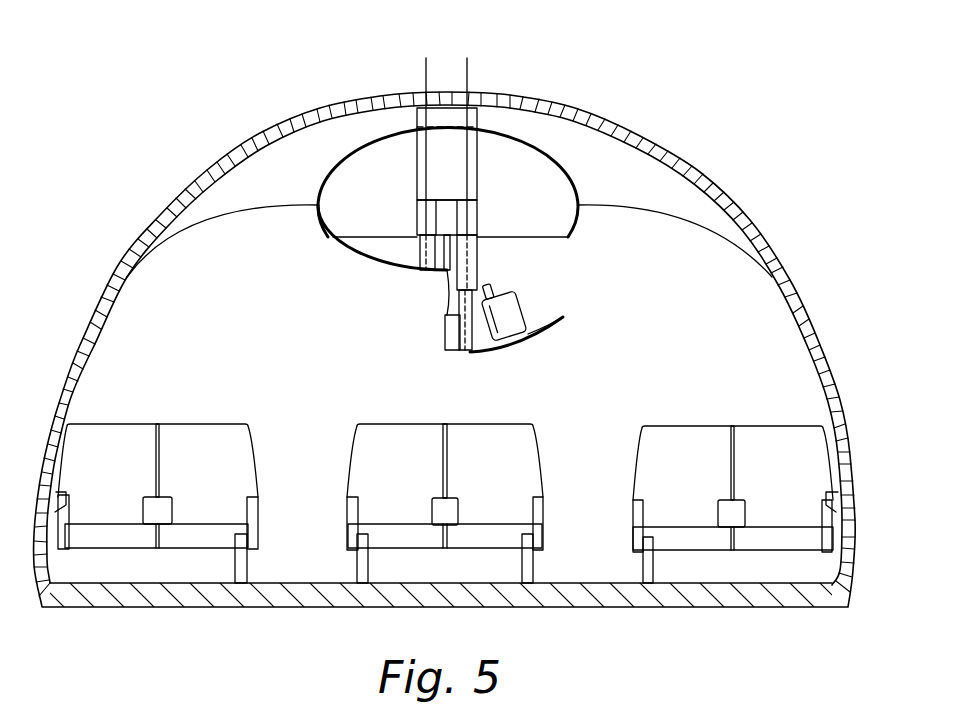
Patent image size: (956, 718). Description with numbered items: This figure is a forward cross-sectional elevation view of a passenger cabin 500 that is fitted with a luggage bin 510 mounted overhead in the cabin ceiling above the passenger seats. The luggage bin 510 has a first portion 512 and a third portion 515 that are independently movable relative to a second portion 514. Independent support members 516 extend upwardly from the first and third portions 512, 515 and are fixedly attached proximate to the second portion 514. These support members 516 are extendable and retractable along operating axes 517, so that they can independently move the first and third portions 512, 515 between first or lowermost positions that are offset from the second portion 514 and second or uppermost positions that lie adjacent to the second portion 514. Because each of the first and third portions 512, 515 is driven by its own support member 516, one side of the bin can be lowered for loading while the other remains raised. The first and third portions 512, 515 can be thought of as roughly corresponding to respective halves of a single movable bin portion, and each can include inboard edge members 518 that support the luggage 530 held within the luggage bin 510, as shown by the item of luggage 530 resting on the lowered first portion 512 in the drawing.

The passenger cabin 500 is at (173, 270).
The luggage bin 510 is at (342, 283).
The first portion 512 is at (488, 348).
The second portion 514 is at (573, 228).
The third portion 515 is at (345, 250).
The support members 516 is at (415, 207).
The operating axes 517 is at (426, 72).
The inboard edge members 518 is at (447, 312).
The luggage 530 is at (522, 297).